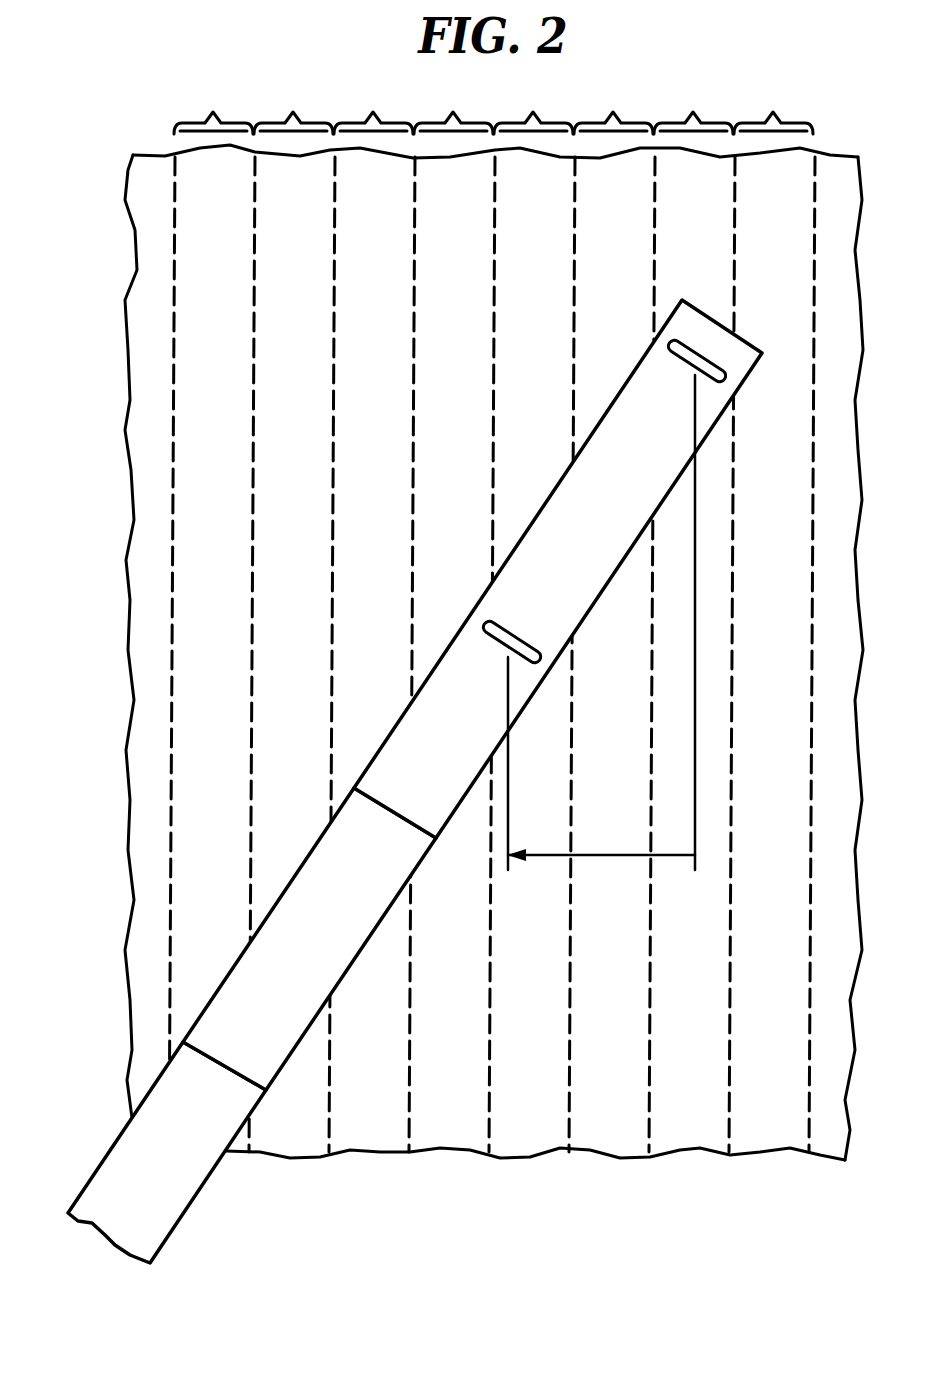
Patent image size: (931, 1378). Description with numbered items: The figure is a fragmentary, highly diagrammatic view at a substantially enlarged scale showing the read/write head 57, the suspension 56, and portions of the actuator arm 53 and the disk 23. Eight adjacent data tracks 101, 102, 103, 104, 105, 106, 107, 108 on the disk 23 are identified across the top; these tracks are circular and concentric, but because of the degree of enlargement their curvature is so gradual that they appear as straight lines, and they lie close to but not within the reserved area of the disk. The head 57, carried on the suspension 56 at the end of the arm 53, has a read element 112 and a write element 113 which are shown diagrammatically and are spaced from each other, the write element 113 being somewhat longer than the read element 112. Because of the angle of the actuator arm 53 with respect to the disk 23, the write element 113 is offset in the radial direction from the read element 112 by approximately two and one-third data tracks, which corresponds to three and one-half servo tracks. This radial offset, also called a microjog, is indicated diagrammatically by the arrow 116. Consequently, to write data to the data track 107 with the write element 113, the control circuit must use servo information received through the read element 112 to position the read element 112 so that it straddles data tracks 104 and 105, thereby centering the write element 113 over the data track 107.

The disk 23 is at (530, 1160).
The actuator arm 53 is at (184, 1174).
The suspension 56 is at (293, 956).
The read/write head 57 is at (633, 506).
The data track 101 is at (213, 103).
The data track 102 is at (293, 103).
The data track 103 is at (373, 103).
The data track 104 is at (453, 103).
The data track 105 is at (533, 103).
The data track 106 is at (613, 103).
The data track 107 is at (693, 103).
The data track 108 is at (773, 103).
The read element 112 is at (540, 661).
The write element 113 is at (669, 343).
The radial offset 116 is at (607, 855).